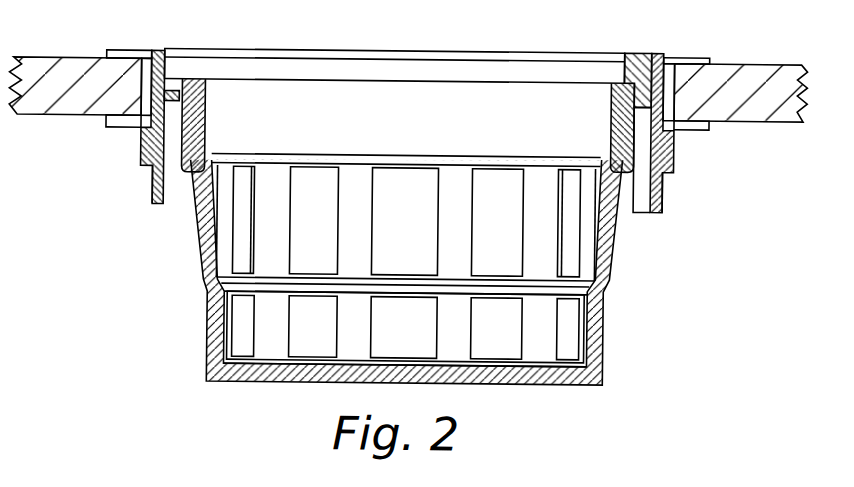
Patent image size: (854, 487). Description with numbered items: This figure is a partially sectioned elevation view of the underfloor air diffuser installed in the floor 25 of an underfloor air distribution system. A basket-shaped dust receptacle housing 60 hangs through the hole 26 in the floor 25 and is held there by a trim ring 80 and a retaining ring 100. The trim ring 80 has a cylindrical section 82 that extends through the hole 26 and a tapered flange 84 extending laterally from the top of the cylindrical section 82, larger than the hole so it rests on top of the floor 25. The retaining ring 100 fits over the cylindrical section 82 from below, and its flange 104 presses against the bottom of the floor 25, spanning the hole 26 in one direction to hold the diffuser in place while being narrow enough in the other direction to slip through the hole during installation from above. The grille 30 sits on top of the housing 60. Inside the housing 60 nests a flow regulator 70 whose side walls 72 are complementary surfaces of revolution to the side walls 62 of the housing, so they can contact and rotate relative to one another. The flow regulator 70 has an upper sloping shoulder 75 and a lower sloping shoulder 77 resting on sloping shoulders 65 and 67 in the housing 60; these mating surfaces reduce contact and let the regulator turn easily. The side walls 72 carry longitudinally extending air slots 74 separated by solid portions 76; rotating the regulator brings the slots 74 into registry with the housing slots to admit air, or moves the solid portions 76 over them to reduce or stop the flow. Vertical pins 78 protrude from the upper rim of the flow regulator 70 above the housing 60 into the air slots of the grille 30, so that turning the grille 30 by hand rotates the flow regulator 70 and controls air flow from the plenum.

The floor 25 is at (44, 68).
The hole 26 is at (155, 51).
The grille 30 is at (258, 76).
The tapered flange 84 is at (147, 76).
The flange 104 is at (114, 132).
The vertical tabs or pins 78 is at (612, 78).
The retaining ring 100 is at (697, 128).
The cylindrical section 82 is at (152, 182).
The trim ring 80 is at (663, 190).
The housing 60 is at (624, 265).
The sloping shoulder 65 is at (183, 174).
The side walls 62 is at (193, 244).
The sloping shoulder 67 is at (202, 292).
The side walls 72 is at (219, 326).
The flow regulator 70 is at (598, 326).
The upper sloping shoulder 75 is at (213, 160).
The lower sloping shoulder 77 is at (243, 278).
The air slots 74 is at (322, 350).
The solid portions 76 is at (460, 347).